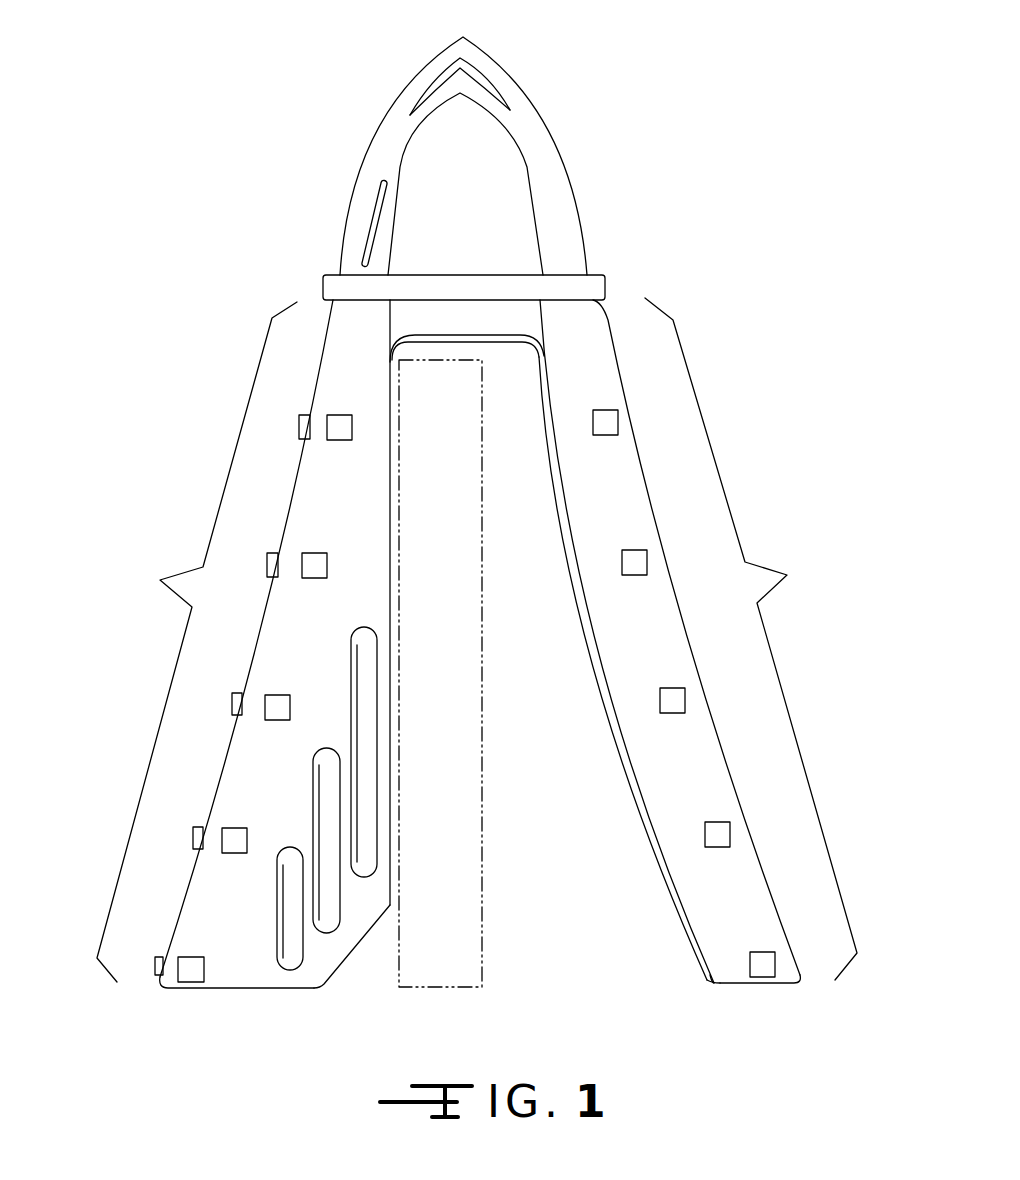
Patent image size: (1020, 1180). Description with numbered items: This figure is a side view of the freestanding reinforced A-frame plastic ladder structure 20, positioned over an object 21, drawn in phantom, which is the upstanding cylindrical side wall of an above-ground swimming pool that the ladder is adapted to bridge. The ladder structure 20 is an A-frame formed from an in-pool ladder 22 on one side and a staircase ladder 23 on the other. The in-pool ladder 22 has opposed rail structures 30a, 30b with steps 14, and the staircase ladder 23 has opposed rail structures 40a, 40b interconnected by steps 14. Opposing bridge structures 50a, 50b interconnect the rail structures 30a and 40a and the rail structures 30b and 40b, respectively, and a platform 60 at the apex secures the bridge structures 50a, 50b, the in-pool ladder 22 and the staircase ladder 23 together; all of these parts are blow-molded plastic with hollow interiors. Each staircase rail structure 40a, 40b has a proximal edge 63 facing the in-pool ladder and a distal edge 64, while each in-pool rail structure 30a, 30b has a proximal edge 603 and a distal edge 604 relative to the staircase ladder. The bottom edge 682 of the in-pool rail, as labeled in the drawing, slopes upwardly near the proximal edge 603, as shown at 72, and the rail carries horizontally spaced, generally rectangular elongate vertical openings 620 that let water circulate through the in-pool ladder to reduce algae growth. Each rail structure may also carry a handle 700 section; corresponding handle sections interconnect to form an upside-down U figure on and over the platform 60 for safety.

The handle section 700 is at (570, 203).
The platform 60 is at (434, 273).
The bridge structure 50a is at (513, 312).
The bridge structure 50b is at (501, 343).
The A-frame plastic ladder structure 20 is at (668, 508).
The object 21 is at (482, 705).
The in-pool ladder 22 is at (197, 642).
The staircase ladder 23 is at (751, 639).
The steps 14 is at (300, 428).
The rail structure 30a is at (263, 623).
The rail structure 30b is at (370, 780).
The rail structure 40a is at (778, 822).
The rail structure 40b is at (633, 782).
The distal edge 64 is at (742, 802).
The proximal edge 63 is at (683, 922).
The distal edge 604 is at (217, 787).
The proximal edge 603 is at (392, 837).
The left leg bottom edge 682 is at (235, 992).
The upward slope of bottom edge 72 is at (347, 957).
The ventilation openings 620 is at (373, 665).